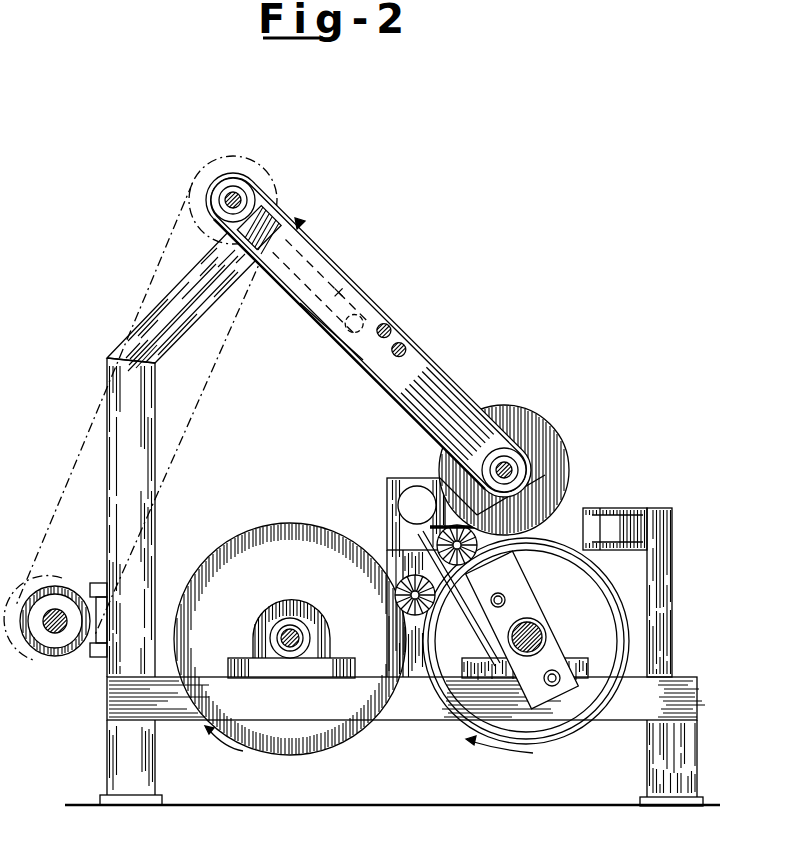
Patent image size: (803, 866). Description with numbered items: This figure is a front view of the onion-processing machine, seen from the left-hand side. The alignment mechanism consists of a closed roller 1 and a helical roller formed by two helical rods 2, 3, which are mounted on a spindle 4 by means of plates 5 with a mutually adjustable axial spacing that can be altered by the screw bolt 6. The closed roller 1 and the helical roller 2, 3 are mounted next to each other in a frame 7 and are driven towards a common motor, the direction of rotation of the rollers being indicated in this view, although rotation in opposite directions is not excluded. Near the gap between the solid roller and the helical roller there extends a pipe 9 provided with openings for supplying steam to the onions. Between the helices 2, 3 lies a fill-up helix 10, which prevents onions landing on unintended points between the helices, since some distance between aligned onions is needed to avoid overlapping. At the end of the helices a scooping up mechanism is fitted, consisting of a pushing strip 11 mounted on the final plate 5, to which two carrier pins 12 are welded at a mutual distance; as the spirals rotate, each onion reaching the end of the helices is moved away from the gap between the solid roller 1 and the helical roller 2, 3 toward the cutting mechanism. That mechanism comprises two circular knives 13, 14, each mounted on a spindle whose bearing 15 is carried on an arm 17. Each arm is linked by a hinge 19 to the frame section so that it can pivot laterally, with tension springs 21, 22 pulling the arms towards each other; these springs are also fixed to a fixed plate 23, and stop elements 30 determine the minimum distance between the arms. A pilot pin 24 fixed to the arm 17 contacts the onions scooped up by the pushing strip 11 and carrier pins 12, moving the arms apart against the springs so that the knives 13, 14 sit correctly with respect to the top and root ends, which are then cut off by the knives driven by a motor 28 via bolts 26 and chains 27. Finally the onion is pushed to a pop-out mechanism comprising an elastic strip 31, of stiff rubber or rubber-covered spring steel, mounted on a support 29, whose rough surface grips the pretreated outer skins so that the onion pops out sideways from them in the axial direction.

The closed roller 1 is at (286, 523).
The helical rod 2 is at (526, 653).
The helical rod 3 is at (573, 735).
The spindle 4 is at (538, 620).
The plate 5 is at (562, 668).
The screw bolt 6 is at (558, 676).
The frame 7 is at (693, 683).
The pipe 9 is at (398, 503).
The fill-up helix 10 is at (447, 706).
The pushing strip 11 is at (430, 553).
The carrier pin 12 is at (468, 601).
The circular knife 13 is at (519, 457).
The circular knife 14 is at (547, 437).
The bearing 15 is at (520, 470).
The arm 17 is at (437, 392).
The hinge 19 is at (299, 227).
The tension spring 21 is at (404, 341).
The tension spring 22 is at (388, 323).
The fixed plate 23 is at (343, 276).
The pilot pin 24 is at (446, 487).
The bolt 26 is at (357, 355).
The chain 27 is at (157, 266).
The motor 28 is at (62, 645).
The support 29 is at (663, 612).
The stop element 30 is at (363, 305).
The elastic strip 31 is at (588, 509).